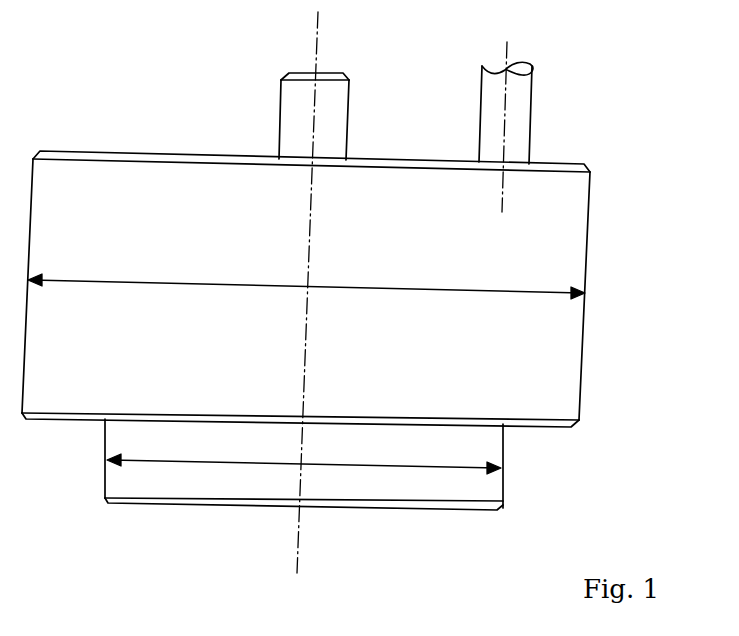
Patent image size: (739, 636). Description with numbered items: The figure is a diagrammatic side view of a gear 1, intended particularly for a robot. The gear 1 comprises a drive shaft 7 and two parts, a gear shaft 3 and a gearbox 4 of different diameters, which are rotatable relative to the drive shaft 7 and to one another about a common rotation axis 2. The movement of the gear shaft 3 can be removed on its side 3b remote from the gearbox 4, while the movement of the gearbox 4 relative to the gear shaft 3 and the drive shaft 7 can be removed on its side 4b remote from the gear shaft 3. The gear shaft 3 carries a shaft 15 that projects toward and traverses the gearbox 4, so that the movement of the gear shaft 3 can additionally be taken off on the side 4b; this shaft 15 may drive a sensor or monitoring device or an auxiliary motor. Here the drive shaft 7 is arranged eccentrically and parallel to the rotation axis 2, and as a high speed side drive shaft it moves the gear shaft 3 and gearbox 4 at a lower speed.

The gear 1 is at (186, 73).
The rotation axis 2 is at (318, 47).
The gear shaft 3 is at (334, 502).
The side of part 3 remote from part 4 3b is at (447, 508).
The gearbox 4 is at (328, 248).
The side of part 4 remote from part 3 4b is at (78, 153).
The drive shaft 7 is at (522, 106).
The shaft 15 is at (335, 127).